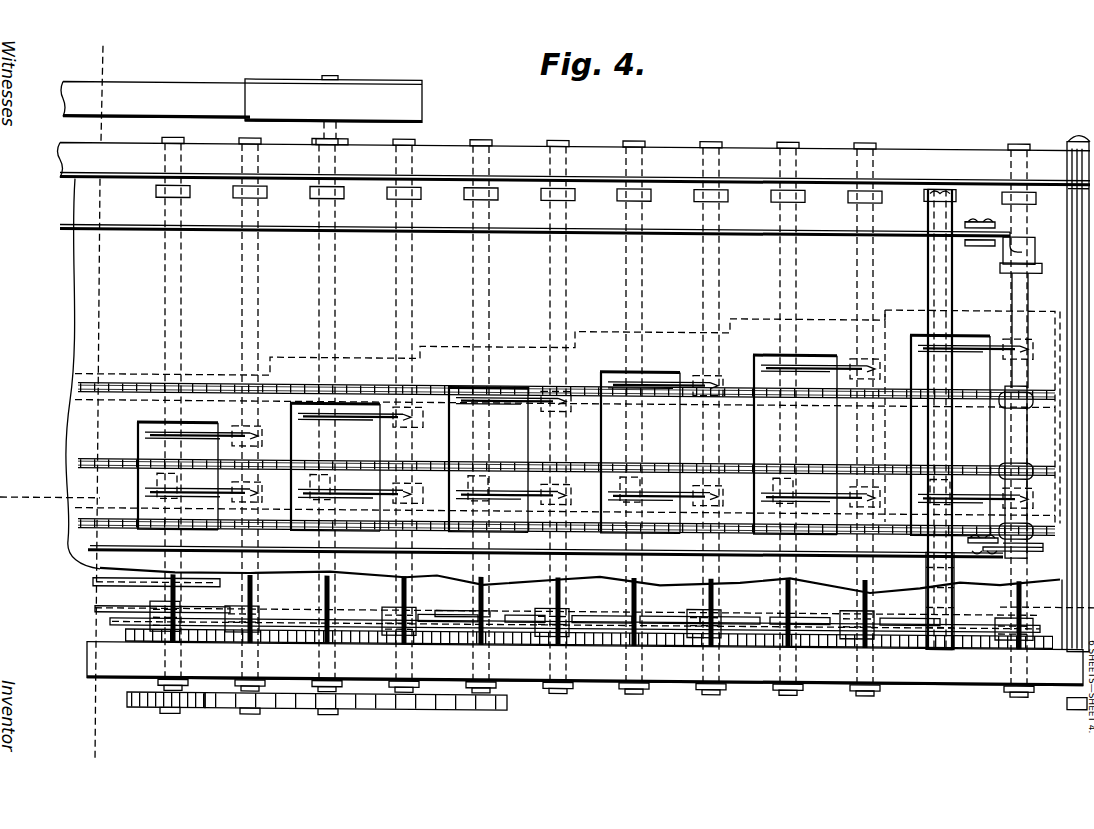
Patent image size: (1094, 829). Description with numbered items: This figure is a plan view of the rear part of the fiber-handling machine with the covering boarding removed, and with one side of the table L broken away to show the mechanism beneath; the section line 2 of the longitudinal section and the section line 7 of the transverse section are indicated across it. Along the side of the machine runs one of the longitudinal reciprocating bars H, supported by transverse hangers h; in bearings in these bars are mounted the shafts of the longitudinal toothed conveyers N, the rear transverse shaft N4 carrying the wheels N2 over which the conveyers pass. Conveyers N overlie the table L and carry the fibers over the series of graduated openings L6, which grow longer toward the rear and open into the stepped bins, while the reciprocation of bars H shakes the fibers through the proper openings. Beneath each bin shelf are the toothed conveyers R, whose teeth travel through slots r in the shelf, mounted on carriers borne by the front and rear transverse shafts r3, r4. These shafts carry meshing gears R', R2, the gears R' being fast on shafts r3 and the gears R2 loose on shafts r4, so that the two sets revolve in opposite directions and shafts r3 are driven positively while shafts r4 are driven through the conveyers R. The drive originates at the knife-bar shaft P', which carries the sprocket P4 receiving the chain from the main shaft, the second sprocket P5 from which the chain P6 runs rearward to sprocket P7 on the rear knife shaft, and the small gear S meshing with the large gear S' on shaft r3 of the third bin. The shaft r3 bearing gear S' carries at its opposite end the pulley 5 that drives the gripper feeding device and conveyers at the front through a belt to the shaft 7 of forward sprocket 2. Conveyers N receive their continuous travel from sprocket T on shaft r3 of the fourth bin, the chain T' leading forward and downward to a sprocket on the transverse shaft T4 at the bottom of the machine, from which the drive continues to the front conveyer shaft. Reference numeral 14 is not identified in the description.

The upper bar 14 is at (196, 60).
The pulley 5 is at (372, 80).
The shaft 7 is at (91, 403).
The sprocket 2 is at (12, 600).
The bars H is at (450, 228).
The table L is at (511, 280).
The hangers h is at (930, 260).
The transverse shaft N4 is at (1015, 284).
The toothed conveyers N is at (262, 519).
The wheels N2 is at (1025, 394).
The graduated openings L6 is at (922, 413).
The slots r is at (966, 487).
The toothed conveyers R is at (589, 429).
The sprocket T is at (580, 576).
The chain T' is at (462, 601).
The transverse shaft T4 is at (243, 596).
The transverse shafts r3 is at (97, 574).
The transverse shafts r4 is at (408, 592).
The sprocket P4 is at (133, 587).
The sprocket P5 is at (110, 619).
The chain P6 is at (600, 620).
The sprocket P7 is at (970, 624).
The gears R' is at (576, 625).
The gears R2 is at (1037, 652).
The small gear S is at (162, 739).
The large gear S' is at (370, 723).
The transverse shaft P' is at (249, 725).